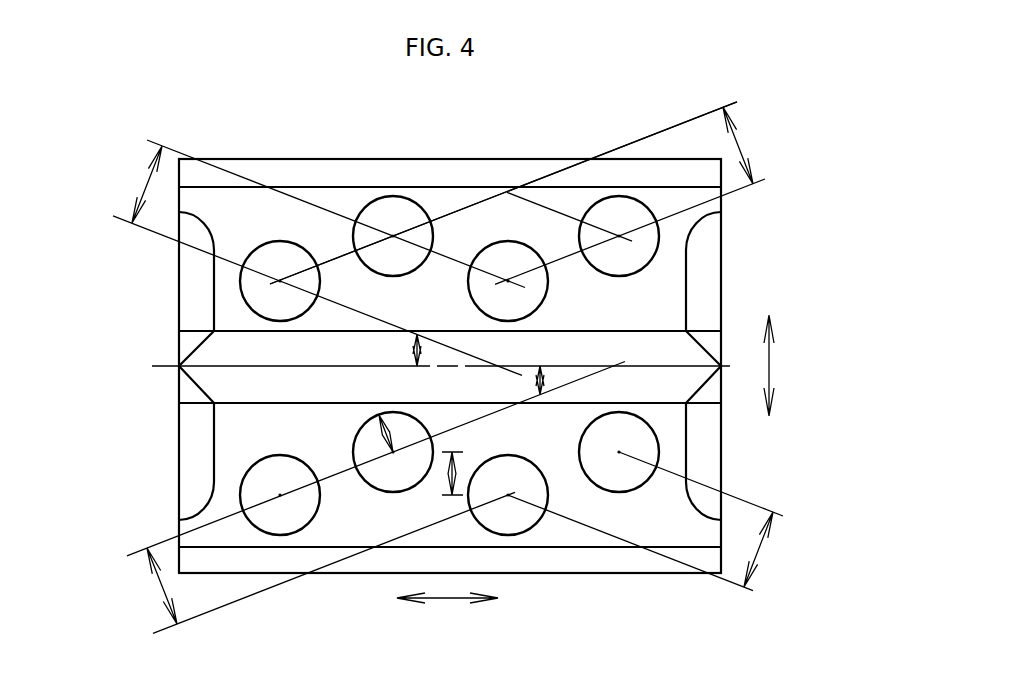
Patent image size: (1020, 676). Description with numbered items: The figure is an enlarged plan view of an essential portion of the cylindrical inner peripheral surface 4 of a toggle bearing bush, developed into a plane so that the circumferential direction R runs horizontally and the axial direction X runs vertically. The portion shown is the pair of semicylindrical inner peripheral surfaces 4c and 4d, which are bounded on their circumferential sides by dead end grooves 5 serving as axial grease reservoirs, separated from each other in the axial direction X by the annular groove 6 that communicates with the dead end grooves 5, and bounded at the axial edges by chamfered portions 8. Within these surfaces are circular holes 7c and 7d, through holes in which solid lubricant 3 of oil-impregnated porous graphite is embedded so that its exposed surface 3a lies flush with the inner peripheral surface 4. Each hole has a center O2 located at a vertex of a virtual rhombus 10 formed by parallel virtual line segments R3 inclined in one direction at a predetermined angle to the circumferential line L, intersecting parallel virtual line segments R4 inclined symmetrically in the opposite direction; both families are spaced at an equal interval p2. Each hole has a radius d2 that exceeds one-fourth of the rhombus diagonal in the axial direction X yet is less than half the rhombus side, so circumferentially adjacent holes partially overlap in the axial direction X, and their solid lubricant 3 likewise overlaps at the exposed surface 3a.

The solid lubricant 3 is at (395, 212).
The exposed surface 3a is at (382, 212).
The cylindrical inner peripheral surface 4 is at (230, 295).
The semicylindrical inner peripheral surface 4c is at (323, 200).
The semicylindrical inner peripheral surface 4d is at (588, 538).
The dead end groove 5 is at (703, 268).
The annular groove 6 is at (670, 385).
The circular hole 7c is at (415, 207).
The circular hole 7d is at (388, 485).
The chamfered portion 8 is at (240, 167).
The virtual rhombus 10 is at (483, 200).
The virtual line segment R3 is at (682, 122).
The virtual line segment R4 is at (285, 192).
The equal interval p2 is at (146, 181).
The center O2 is at (393, 238).
The radius d2 is at (385, 436).
The circumferential line L is at (175, 368).
The axial direction X is at (775, 362).
The circumferential direction R is at (445, 600).